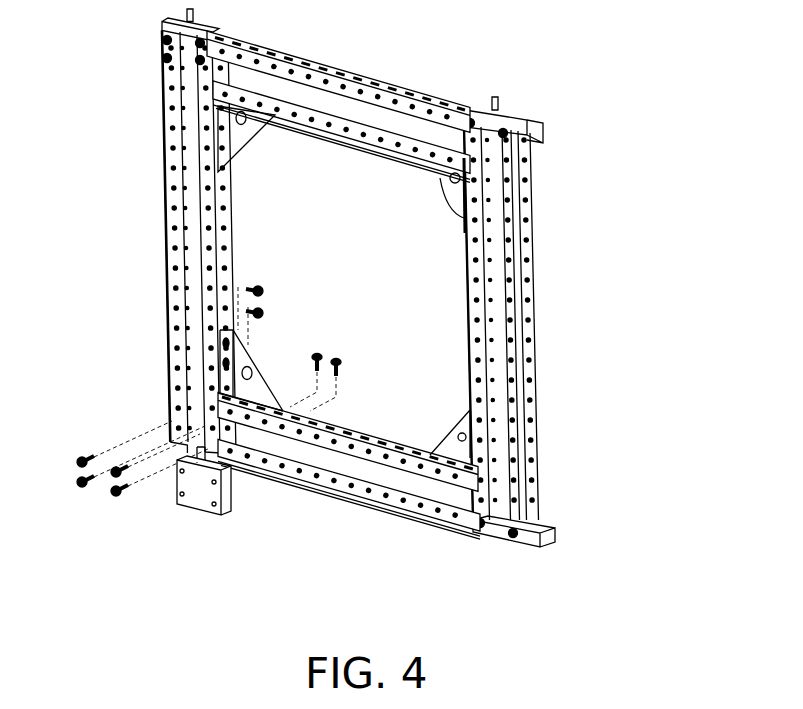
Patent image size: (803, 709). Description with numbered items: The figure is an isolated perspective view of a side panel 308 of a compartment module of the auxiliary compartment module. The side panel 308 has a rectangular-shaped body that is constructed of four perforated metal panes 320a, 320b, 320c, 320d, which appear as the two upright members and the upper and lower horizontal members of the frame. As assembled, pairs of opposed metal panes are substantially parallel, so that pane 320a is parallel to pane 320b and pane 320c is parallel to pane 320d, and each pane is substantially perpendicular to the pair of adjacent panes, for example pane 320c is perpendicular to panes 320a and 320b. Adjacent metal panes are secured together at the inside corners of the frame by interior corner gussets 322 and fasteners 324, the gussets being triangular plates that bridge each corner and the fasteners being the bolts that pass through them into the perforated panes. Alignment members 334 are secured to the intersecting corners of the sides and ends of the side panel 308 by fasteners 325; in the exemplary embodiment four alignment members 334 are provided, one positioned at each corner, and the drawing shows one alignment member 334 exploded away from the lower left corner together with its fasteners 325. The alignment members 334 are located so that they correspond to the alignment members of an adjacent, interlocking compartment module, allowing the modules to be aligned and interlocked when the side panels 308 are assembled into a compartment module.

The side panel 308 is at (348, 289).
The perforated metal pane 320a is at (165, 325).
The perforated metal pane 320b is at (540, 286).
The perforated metal pane 320c is at (417, 512).
The perforated metal pane 320d is at (365, 70).
The interior corner gusset 322 is at (463, 224).
The fastener 324 is at (253, 284).
The fastener 325 is at (87, 484).
The alignment member 334 is at (193, 500).